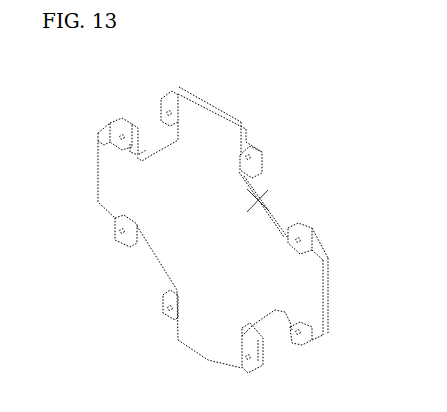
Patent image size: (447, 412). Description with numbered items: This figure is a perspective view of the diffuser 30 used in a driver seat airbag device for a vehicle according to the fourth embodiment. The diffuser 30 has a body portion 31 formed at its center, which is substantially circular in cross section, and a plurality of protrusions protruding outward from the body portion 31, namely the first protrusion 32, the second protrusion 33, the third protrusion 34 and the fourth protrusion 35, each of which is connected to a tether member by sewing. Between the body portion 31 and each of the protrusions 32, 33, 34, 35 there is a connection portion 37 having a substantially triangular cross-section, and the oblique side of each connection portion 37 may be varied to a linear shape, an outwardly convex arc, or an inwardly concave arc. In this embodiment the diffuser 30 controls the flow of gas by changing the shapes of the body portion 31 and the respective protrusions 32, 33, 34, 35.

The diffuser 30 is at (284, 78).
The body portion 31 is at (275, 204).
The first protrusion 32 is at (212, 99).
The second protrusion 33 is at (348, 296).
The third protrusion 34 is at (210, 369).
The fourth protrusion 35 is at (81, 175).
The connection portion 37 is at (207, 290).